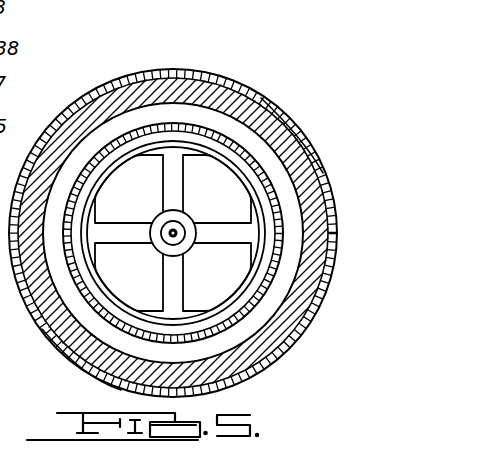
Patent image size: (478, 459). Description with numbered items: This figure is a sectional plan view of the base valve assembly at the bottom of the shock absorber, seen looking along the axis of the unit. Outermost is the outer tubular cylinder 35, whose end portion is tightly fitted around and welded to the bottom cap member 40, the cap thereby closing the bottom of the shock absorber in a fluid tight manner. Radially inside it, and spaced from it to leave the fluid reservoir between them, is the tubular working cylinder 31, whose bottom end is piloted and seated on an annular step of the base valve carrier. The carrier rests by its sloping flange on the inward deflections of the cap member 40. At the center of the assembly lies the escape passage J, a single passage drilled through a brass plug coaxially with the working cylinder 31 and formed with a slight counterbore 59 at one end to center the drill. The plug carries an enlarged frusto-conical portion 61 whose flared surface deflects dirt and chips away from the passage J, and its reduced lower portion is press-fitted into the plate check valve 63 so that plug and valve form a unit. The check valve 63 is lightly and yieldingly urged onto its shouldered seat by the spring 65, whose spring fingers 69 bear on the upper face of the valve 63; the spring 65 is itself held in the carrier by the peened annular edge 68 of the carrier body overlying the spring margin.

The outer tubular cylinder 35 is at (173, 233).
The bottom cap member 40 is at (173, 233).
The tubular working cylinder 31 is at (158, 213).
The peened annular edge 68 is at (173, 184).
The spring 65 is at (174, 189).
The plate check valve 63 is at (129, 189).
The spring fingers 69 is at (173, 233).
The enlarged frusto-conical portion 61 is at (154, 229).
The counterbore 59 is at (191, 248).
The escape passage J is at (191, 215).